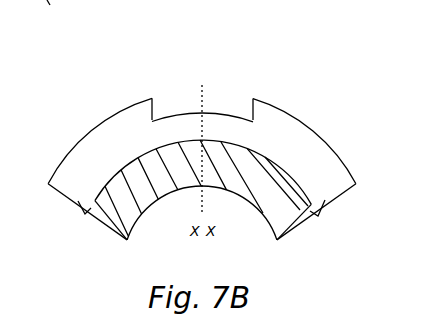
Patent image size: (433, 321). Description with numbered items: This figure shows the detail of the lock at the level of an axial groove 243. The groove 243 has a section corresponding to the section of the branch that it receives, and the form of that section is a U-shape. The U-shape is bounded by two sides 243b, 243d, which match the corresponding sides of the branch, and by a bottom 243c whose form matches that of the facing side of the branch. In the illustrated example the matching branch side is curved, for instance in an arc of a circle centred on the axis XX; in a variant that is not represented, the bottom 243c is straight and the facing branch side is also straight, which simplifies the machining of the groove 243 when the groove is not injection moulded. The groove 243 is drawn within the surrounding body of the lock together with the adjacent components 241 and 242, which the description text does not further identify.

The inner magnetic layer 241 is at (288, 212).
The outer body segment 242 is at (308, 149).
The axial groove 243 is at (216, 65).
The side of the groove 243b is at (252, 108).
The bottom of the groove 243c is at (202, 97).
The side of the groove 243d is at (163, 108).